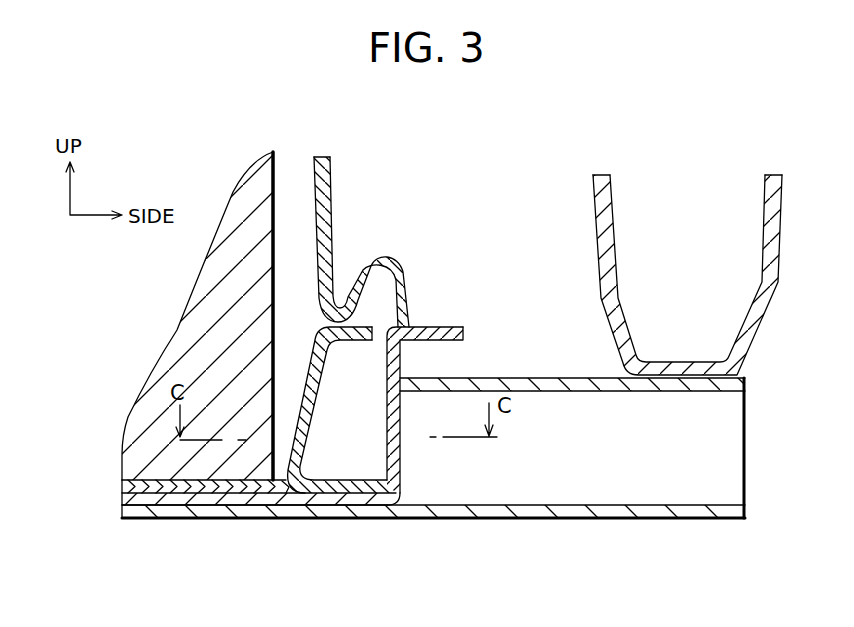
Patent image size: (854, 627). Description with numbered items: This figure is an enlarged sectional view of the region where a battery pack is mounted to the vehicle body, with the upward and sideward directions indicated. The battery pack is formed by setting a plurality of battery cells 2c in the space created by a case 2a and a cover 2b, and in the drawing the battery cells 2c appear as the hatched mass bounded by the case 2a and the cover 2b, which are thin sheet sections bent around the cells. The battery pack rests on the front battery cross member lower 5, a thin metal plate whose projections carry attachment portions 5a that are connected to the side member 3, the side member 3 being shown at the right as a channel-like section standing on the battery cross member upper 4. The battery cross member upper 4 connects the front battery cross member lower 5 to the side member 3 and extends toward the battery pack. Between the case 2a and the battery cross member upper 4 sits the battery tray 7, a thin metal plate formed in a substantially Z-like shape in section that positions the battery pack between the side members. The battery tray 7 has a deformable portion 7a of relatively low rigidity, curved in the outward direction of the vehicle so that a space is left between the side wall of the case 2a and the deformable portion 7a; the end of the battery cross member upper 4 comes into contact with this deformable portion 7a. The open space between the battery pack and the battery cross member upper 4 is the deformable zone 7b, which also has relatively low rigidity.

The case 2a is at (312, 348).
The cover 2b is at (331, 197).
The battery cells 2c is at (218, 265).
The side member 3 is at (582, 229).
The battery cross member upper 4 is at (758, 442).
The front battery cross member lower 5 is at (282, 532).
The attachment portion 5a is at (569, 508).
The battery tray 7 is at (454, 316).
The deformable portion 7a is at (396, 457).
The deformable zone 7b is at (364, 408).